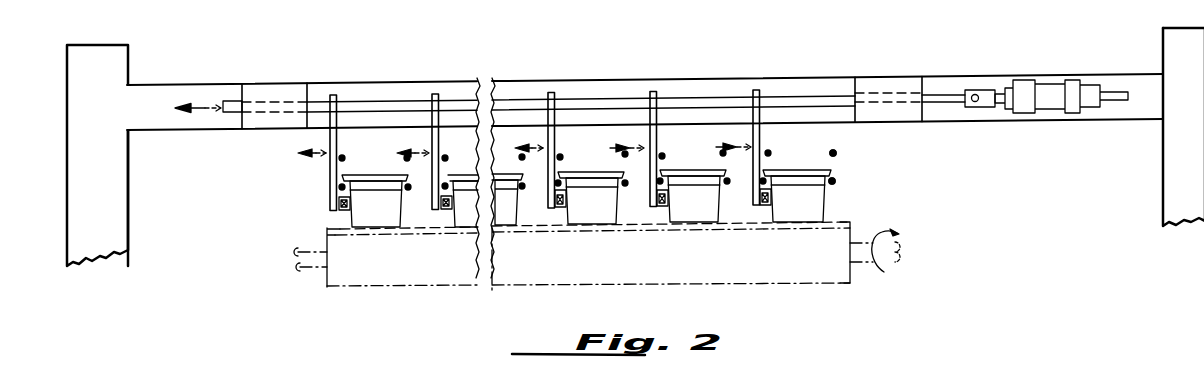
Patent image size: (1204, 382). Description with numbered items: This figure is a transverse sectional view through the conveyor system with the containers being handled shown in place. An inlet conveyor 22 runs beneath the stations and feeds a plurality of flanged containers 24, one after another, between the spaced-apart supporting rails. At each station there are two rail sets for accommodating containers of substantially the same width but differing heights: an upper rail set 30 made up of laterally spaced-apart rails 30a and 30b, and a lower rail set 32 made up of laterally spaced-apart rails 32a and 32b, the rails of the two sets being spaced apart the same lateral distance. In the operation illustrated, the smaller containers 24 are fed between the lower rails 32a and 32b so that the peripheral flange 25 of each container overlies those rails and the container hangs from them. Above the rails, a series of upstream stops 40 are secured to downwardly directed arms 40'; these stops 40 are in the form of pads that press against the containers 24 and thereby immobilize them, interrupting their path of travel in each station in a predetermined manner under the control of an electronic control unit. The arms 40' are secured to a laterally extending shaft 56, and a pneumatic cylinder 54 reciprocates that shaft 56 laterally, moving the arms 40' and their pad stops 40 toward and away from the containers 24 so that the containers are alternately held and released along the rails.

The inlet conveyor 22 is at (843, 219).
The containers 24 is at (357, 218).
The peripheral flange 25 is at (378, 177).
The upper rail set 30 is at (842, 155).
The rail 30a is at (560, 155).
The rail 30b is at (622, 156).
The lower rail set 32 is at (842, 184).
The rail 32a is at (566, 188).
The rail 32b is at (627, 184).
The upstream stops 40 is at (555, 204).
The upstream arms 40' is at (545, 124).
The pneumatic cylinder 54 is at (1046, 90).
The laterally extending shaft 56 is at (797, 100).